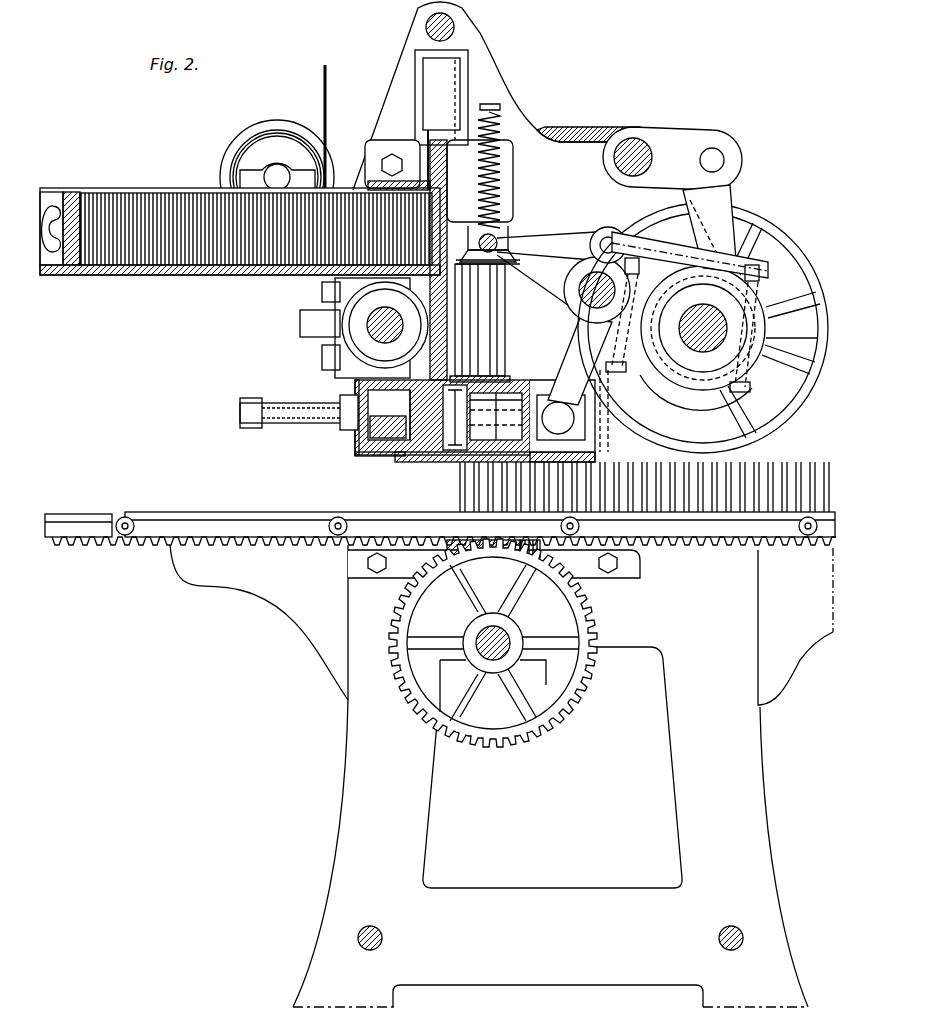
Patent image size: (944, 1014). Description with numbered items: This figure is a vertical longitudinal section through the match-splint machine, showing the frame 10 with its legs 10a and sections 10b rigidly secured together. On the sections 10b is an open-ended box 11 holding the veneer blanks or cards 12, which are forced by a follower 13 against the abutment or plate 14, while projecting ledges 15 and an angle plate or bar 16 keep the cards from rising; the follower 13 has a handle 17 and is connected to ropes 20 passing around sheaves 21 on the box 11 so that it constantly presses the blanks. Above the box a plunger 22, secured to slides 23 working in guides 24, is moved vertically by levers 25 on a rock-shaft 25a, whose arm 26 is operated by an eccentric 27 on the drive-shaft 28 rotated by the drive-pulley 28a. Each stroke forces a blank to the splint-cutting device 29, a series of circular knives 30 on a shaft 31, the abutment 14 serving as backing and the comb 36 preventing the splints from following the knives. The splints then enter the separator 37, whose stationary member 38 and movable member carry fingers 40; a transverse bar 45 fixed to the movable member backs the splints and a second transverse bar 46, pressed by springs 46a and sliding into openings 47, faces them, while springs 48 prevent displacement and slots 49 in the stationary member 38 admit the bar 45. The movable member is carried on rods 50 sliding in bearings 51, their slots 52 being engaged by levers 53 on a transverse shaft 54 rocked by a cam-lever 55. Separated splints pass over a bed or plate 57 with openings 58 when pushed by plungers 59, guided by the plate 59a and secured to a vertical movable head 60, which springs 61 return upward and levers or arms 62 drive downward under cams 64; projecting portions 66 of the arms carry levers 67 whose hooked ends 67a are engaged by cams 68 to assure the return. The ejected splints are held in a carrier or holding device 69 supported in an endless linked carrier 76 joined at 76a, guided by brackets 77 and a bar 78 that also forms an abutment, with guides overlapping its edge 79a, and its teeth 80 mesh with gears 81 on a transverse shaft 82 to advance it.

The frame 10 is at (563, 504).
The legs 10a is at (310, 898).
The sections 10b is at (571, 176).
The open-ended box 11 is at (238, 233).
The veneer blanks or cards 12 is at (140, 270).
The follower 13 is at (72, 192).
The abutment or plate 14 is at (462, 180).
The projecting ledges 15 is at (170, 190).
The angle plate or bar 16 is at (368, 146).
The handle 17 is at (42, 262).
The ropes 20 is at (323, 100).
The sheaves 21 is at (245, 136).
The plunger 22 is at (426, 135).
The slides 23 is at (440, 130).
The guides 24 is at (465, 62).
The levers 25 is at (578, 130).
The rock-shaft 25a is at (640, 136).
The arm 26 is at (700, 133).
The eccentric 27 is at (735, 198).
The drive-shaft 28 is at (688, 342).
The drive-pulley 28a is at (790, 245).
The splint-cutting device 29 is at (355, 330).
The circular knives 30 is at (320, 292).
The shaft 31 is at (385, 325).
The comb 36 is at (356, 383).
The separator 37 is at (380, 465).
The stationary member 38 is at (569, 408).
The fingers 40 is at (492, 421).
The transverse bar 45 is at (455, 417).
The second transverse bar 46 is at (412, 458).
The springs 46a is at (389, 411).
The openings 47 is at (356, 455).
The springs 48 is at (388, 433).
The openings or slots 49 is at (531, 393).
The rods 50 is at (300, 424).
The bearings 51 is at (345, 432).
The slots 52 is at (576, 420).
The levers 53 is at (565, 335).
The transverse shaft 54 is at (582, 283).
The cam-lever 55 is at (696, 403).
The bed or plate 57 is at (430, 463).
The openings 58 is at (462, 463).
The plungers 59 is at (497, 333).
The plate or bed 59a is at (500, 376).
The vertical movable head 60 is at (505, 282).
The springs 61 is at (501, 188).
The levers or arms 62 is at (533, 258).
The cams 64 is at (758, 290).
The projecting portions 66 is at (592, 250).
The levers 67 is at (630, 233).
The hooked ends 67a is at (760, 272).
The cams 68 is at (757, 355).
The carrier or holding device 69 is at (440, 499).
The endless linked carrier 76 is at (148, 540).
The joints 76a is at (125, 516).
The brackets 77 is at (268, 610).
The bar 78 is at (497, 556).
The edge 79a is at (697, 538).
The teeth 80 is at (235, 545).
The gears 81 is at (580, 680).
The transverse shaft 82 is at (508, 634).